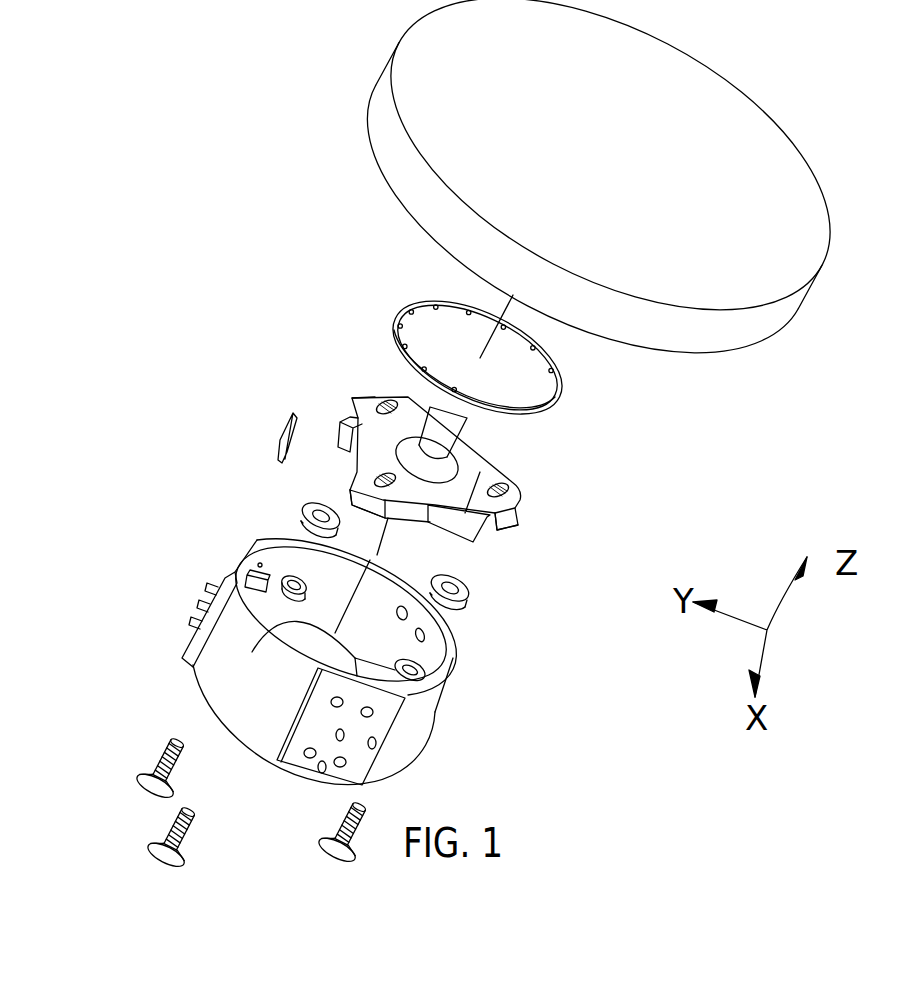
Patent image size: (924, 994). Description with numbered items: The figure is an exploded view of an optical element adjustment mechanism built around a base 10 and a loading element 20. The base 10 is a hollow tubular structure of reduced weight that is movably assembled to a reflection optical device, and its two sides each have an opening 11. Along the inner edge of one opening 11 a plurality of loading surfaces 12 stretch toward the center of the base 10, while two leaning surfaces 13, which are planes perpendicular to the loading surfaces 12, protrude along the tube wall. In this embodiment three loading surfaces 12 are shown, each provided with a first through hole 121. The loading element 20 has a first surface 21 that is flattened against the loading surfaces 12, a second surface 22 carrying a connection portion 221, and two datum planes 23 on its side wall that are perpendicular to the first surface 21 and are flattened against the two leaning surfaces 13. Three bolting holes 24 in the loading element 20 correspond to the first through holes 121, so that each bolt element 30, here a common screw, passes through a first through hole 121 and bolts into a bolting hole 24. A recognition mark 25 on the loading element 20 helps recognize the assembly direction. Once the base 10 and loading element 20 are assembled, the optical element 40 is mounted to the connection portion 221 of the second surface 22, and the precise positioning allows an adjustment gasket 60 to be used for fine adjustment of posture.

The base 10 is at (311, 630).
The opening 11 is at (253, 648).
The loading surface 12 is at (227, 534).
The first through hole 121 is at (297, 577).
The leaning surface 13 is at (362, 657).
The loading element 20 is at (449, 436).
The first surface 21 is at (347, 482).
The second surface 22 is at (500, 503).
The connection portion 221 is at (445, 425).
The datum plane 23 is at (345, 422).
The bolting hole 24 is at (508, 484).
The recognition mark 25 is at (373, 402).
The bolt element 30 is at (188, 815).
The optical element 40 is at (753, 250).
The adjustment gasket 60 is at (282, 433).